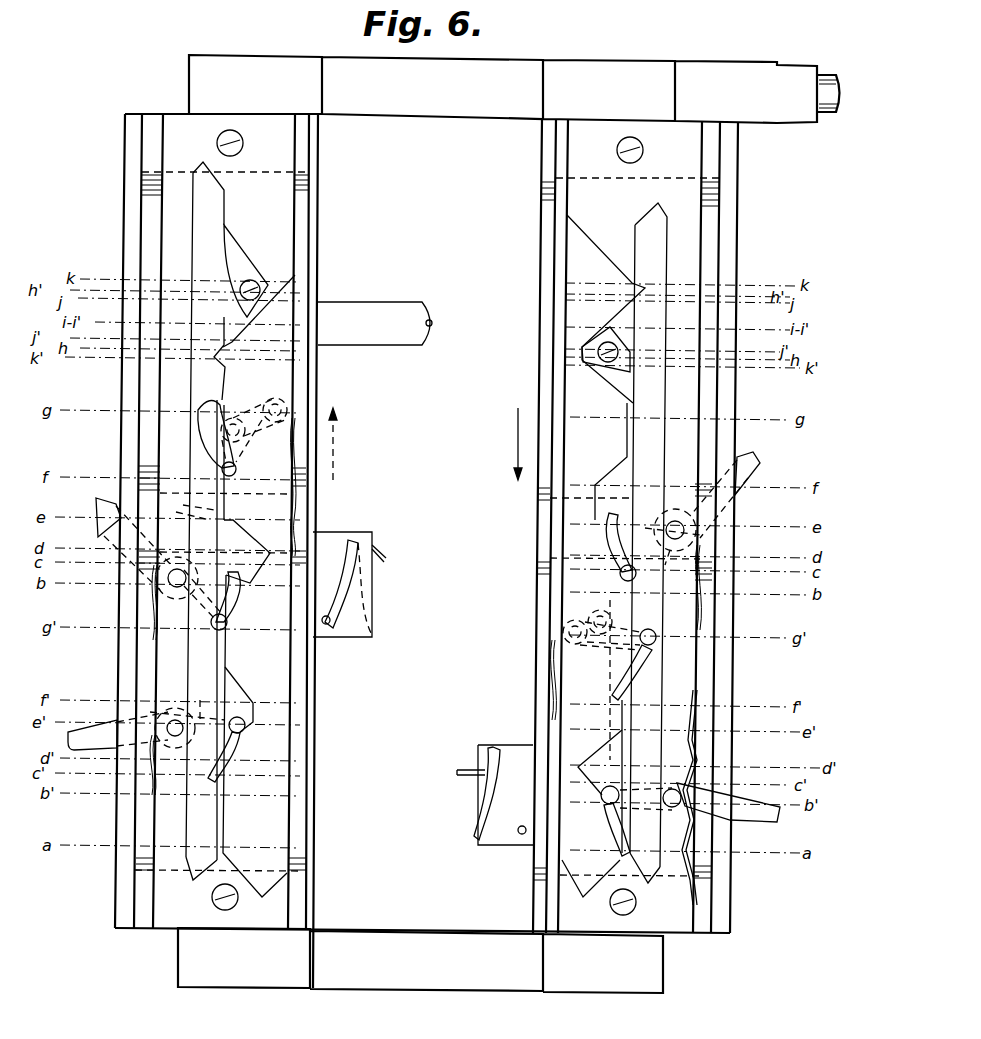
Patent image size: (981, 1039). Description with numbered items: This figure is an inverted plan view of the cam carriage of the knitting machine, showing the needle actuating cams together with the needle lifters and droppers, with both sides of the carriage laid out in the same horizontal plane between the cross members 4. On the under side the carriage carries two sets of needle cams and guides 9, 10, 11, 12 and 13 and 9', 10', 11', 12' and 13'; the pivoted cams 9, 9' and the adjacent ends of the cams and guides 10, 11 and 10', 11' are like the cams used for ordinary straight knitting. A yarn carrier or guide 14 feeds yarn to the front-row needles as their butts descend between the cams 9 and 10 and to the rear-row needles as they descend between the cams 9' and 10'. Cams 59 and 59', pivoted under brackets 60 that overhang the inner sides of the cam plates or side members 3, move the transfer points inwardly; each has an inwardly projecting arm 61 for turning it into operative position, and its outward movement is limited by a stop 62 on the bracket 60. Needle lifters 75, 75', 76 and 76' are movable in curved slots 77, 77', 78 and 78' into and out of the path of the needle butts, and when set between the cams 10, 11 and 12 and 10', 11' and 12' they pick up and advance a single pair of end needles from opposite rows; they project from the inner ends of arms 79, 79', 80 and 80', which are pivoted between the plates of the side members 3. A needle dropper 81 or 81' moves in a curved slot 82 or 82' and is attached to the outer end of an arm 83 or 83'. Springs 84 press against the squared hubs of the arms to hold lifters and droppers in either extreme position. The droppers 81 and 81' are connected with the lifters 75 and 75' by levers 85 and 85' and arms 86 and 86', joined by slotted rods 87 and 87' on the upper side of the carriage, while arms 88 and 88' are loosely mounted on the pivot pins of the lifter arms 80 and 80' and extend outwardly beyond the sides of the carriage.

The cam plates or side members 3 is at (125, 216).
The cross bar 4 is at (497, 524).
The pivoted cam 9 is at (606, 353).
The pivoted cam 9' is at (246, 271).
The needle cam or guide 10 is at (603, 556).
The needle cam or guide 10' is at (259, 318).
The needle cam or guide 11 is at (648, 535).
The needle cam or guide 11' is at (205, 509).
The needle cam or guide 12 is at (641, 791).
The needle cam or guide 12' is at (236, 648).
The needle cam or guide 13 is at (600, 762).
The needle cam or guide 13' is at (247, 551).
The yarn carrier or guide 14 is at (375, 323).
The cam 59 is at (465, 804).
The cam 59' is at (342, 584).
The bracket 60 is at (370, 596).
The inwardly projecting arm 61 is at (388, 565).
The stop 62 is at (328, 626).
The needle lifter 75 is at (593, 802).
The needle lifter 75' is at (237, 629).
The needle lifter 76 is at (609, 575).
The needle lifter 76' is at (254, 700).
The curved slot 77 is at (605, 829).
The curved slot 77' is at (245, 597).
The curved slot 78 is at (619, 524).
The curved slot 78' is at (236, 757).
The lifter arm 79 is at (650, 809).
The lifter arm 79' is at (189, 597).
The lifter arm 80 is at (668, 535).
The lifter arm 80' is at (187, 713).
The needle dropper 81 is at (662, 629).
The needle dropper 81' is at (248, 478).
The curved slot 82 is at (649, 672).
The curved slot 82' is at (197, 436).
The dropper arm 83 is at (606, 660).
The dropper arm 83' is at (254, 436).
The spring 84 is at (296, 454).
The lever 85 is at (728, 792).
The lever 85' is at (120, 537).
The arm 86 is at (601, 619).
The arm 86' is at (262, 397).
The slotted rod 87 is at (592, 680).
The slotted rod 87' is at (187, 506).
The arm 88 is at (737, 493).
The arm 88' is at (118, 725).